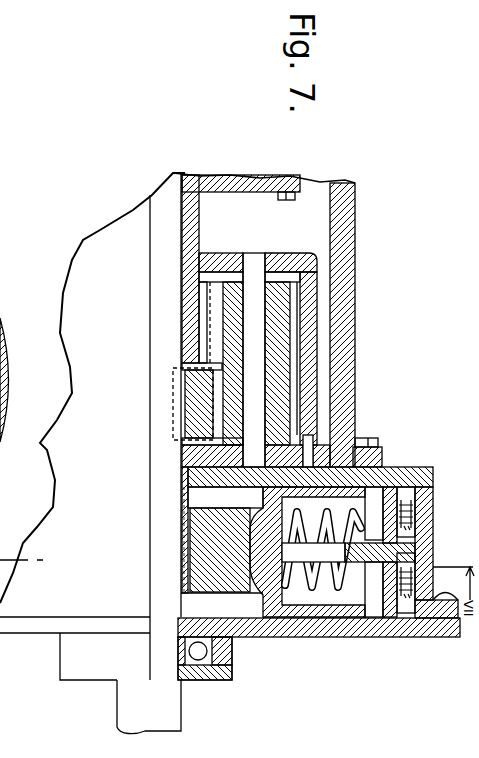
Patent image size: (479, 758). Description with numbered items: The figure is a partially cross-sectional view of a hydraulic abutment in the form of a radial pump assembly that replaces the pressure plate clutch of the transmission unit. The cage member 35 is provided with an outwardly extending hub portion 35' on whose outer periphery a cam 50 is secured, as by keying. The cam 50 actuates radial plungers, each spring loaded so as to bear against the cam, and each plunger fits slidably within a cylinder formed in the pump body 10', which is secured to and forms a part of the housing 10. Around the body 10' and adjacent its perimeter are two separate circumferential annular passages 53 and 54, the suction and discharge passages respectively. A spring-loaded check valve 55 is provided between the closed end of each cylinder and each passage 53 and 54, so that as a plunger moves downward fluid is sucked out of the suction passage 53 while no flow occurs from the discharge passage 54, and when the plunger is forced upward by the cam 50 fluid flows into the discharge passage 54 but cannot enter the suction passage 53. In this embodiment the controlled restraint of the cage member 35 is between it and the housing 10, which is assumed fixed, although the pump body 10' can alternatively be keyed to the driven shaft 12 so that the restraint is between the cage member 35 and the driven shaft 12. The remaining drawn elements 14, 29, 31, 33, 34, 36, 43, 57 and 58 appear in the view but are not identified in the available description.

The housing 10 is at (280, 320).
The pump body 10' is at (326, 495).
The driven shaft 12 is at (170, 710).
The flange body 14 is at (205, 683).
The cylinder 29 is at (200, 197).
The piston rod 31 is at (213, 312).
The block 33 is at (193, 398).
The rod 34 is at (278, 298).
The cage member 35 is at (293, 339).
The hub portion 35' is at (222, 530).
The piston stem 36 is at (255, 263).
The bearing 43 is at (213, 652).
The cam 50 is at (235, 577).
The suction passage 53 is at (408, 497).
The discharge passage 54 is at (406, 607).
The spring-loaded check valve 55 is at (388, 518).
The spring housing 57 is at (273, 608).
The spring stem 58 is at (335, 590).